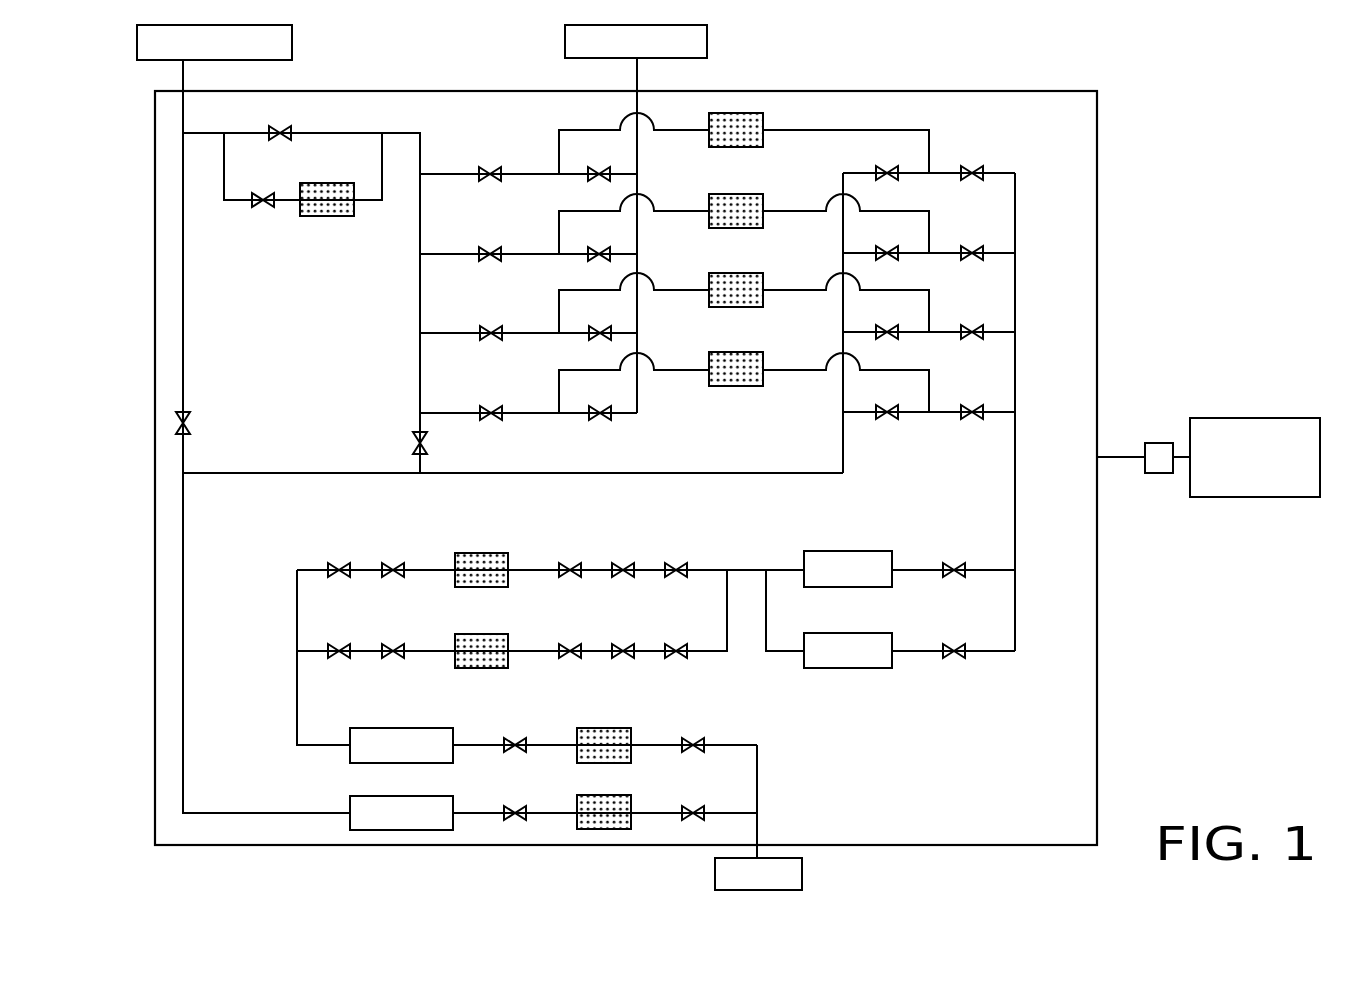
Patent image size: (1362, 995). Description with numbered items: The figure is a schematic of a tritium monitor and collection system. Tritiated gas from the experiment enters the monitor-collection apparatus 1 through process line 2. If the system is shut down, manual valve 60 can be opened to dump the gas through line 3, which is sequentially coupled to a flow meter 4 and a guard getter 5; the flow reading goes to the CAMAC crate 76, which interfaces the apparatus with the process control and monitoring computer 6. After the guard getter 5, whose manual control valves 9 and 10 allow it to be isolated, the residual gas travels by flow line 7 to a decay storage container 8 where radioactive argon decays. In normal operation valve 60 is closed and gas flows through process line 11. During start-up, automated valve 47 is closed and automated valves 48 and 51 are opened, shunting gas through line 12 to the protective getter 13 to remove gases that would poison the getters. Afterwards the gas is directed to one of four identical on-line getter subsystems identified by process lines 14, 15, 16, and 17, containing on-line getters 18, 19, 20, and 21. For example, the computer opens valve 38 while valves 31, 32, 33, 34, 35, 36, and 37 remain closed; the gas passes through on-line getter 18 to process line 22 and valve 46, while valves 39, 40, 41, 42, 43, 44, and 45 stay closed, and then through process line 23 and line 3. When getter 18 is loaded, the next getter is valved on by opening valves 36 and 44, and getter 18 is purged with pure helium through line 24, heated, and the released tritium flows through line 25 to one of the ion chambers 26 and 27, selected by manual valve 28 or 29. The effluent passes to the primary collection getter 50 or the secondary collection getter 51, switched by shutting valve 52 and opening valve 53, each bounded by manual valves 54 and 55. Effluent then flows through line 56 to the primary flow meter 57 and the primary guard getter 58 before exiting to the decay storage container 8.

The monitor-collection apparatus 1 is at (945, 845).
The process line 2 is at (183, 78).
The line 3 is at (183, 335).
The flow meter 4 is at (350, 826).
The guard getter 5 is at (607, 795).
The process control and monitoring computer 6 is at (1243, 497).
The flow line 7 is at (760, 827).
The decay storage container 8 is at (802, 874).
The manual control valve 9 is at (512, 822).
The manual control valve 10 is at (690, 825).
The process line 11 is at (197, 133).
The line 12 is at (237, 200).
The protective getter 13 is at (326, 216).
The process line 14 is at (445, 172).
The process line 15 is at (445, 253).
The process line 16 is at (445, 332).
The process line 17 is at (445, 412).
The on-line getter 18 is at (755, 147).
The on-line getter 19 is at (755, 228).
The on-line getter 20 is at (755, 307).
The on-line getter 21 is at (755, 386).
The process line 22 is at (917, 175).
The process line 23 is at (733, 473).
The line 24 is at (640, 152).
The line 25 is at (1017, 437).
The ion chamber 26 is at (850, 551).
The ion chamber 27 is at (845, 668).
The manual valve 28 is at (965, 552).
The manual valve 29 is at (957, 662).
The valve 31 is at (599, 399).
The valve 32 is at (490, 399).
The valve 33 is at (599, 319).
The valve 34 is at (490, 319).
The valve 35 is at (597, 239).
The valve 36 is at (489, 239).
The valve 37 is at (597, 159).
The valve 38 is at (489, 159).
The valve 39 is at (971, 398).
The valve 40 is at (886, 398).
The valve 41 is at (971, 318).
The valve 42 is at (886, 318).
The valve 43 is at (971, 238).
The valve 44 is at (886, 238).
The valve 45 is at (971, 158).
The valve 46 is at (886, 158).
The automated valve 47 is at (279, 120).
The automated valve 48 is at (259, 185).
The primary collection getter 50 is at (488, 553).
The automated valve / secondary collection getter 51 is at (430, 443).
The valve 52 is at (685, 560).
The valve 53 is at (690, 662).
The manual valves 54 is at (622, 540).
The manual valves 55 is at (622, 622).
The line 56 is at (297, 698).
The primary flow meter 57 is at (395, 728).
The primary guard getter 58 is at (612, 728).
The manual valve 60 is at (212, 422).
The CAMAC Crate 76 is at (1158, 443).